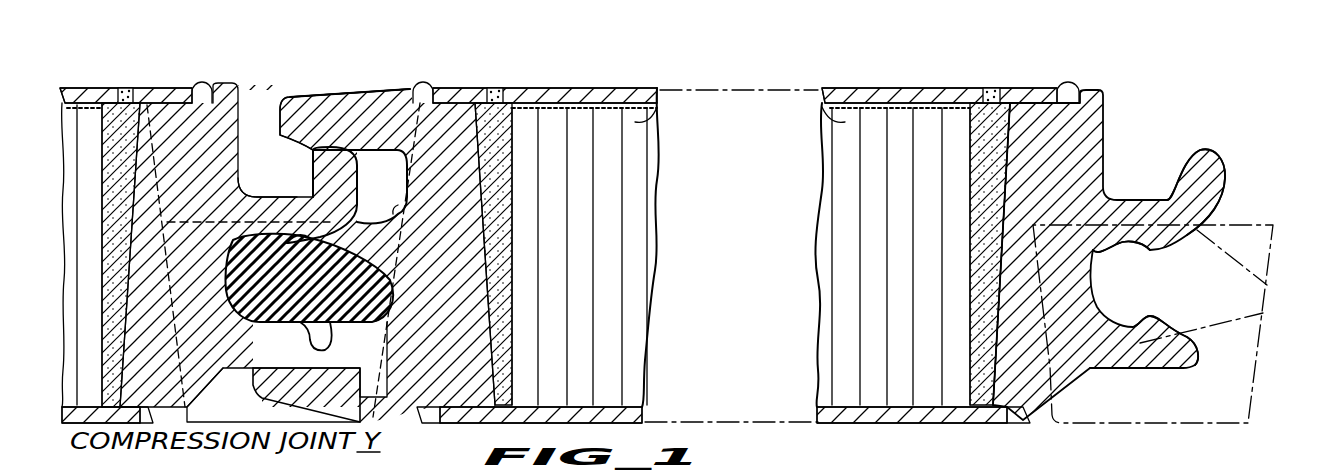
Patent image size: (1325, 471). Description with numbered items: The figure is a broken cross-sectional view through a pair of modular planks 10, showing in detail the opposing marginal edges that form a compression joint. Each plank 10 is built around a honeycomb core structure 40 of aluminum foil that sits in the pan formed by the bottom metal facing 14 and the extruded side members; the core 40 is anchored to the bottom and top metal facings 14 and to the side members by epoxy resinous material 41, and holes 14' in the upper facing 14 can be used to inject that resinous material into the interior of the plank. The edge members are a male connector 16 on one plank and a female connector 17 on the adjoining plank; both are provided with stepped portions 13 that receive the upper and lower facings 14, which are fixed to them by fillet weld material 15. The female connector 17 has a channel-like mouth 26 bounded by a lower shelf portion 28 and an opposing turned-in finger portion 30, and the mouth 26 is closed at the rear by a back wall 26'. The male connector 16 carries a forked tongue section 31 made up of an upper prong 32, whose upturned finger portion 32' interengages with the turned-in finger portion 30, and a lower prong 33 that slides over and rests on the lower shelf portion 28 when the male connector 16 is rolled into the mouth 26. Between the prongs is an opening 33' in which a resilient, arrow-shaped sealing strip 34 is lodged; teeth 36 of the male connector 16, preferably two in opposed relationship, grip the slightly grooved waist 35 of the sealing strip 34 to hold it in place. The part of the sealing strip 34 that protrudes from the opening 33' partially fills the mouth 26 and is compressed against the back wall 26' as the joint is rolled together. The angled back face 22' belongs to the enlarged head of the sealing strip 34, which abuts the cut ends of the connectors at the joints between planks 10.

The modular plank 10 is at (803, 73).
The stepped portion 13 is at (173, 103).
The metal facing 14 is at (558, 253).
The hole 14' is at (527, 227).
The fillet weld material 15 is at (433, 83).
The male connector 16 is at (113, 357).
The female connector 17 is at (388, 83).
The back face 22' is at (249, 260).
The mouth 26 is at (384, 187).
The back wall 26' is at (431, 225).
The lower shelf portion 28 is at (387, 375).
The turned-in finger portion 30 is at (280, 177).
The forked tongue section 31 is at (257, 390).
The upper prong 32 is at (756, 147).
The upturned finger portion 32' is at (345, 103).
The lower prong 33 is at (188, 377).
The opening 33' is at (658, 224).
The sealing strip 34 is at (237, 293).
The grooved waist 35 is at (373, 290).
The tooth 36 is at (317, 240).
The honeycomb core structure 40 is at (840, 233).
The epoxy resinous material 41 is at (113, 157).